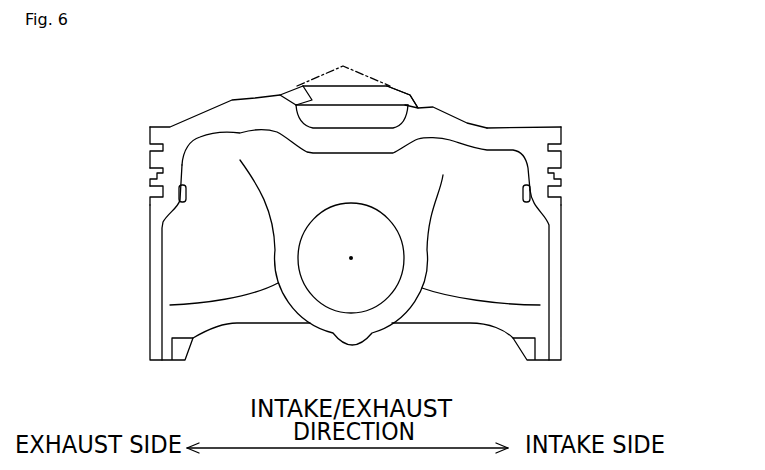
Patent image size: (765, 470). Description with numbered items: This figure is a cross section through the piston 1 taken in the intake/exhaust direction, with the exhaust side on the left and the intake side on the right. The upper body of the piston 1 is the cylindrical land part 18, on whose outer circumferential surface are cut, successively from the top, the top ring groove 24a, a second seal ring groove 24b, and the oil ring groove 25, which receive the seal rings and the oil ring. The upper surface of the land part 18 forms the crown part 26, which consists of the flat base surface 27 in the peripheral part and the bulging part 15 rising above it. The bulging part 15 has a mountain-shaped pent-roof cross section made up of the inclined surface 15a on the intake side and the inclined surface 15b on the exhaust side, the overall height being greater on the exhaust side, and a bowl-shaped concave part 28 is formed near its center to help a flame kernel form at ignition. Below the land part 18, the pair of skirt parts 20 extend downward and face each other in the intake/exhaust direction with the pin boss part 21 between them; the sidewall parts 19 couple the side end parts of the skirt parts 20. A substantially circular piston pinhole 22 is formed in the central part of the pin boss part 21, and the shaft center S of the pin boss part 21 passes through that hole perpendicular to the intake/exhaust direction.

The piston 1 is at (166, 91).
The bulging part 15 is at (470, 124).
The inclined surface on the intake side 15a is at (455, 117).
The inclined surface on the exhaust side 15b is at (200, 113).
The land part 18 is at (558, 162).
The sidewall part 19 is at (503, 285).
The skirt part 20 is at (153, 267).
The pin boss part 21 is at (430, 267).
The piston pinhole 22 is at (405, 250).
The top ring groove 24a is at (153, 150).
The seal ring groove 24b is at (153, 173).
The oil ring groove 25 is at (152, 193).
The crown part 26 is at (582, 40).
The base surface 27 is at (507, 126).
The concave part 28 is at (361, 123).
The shaft center S is at (351, 258).